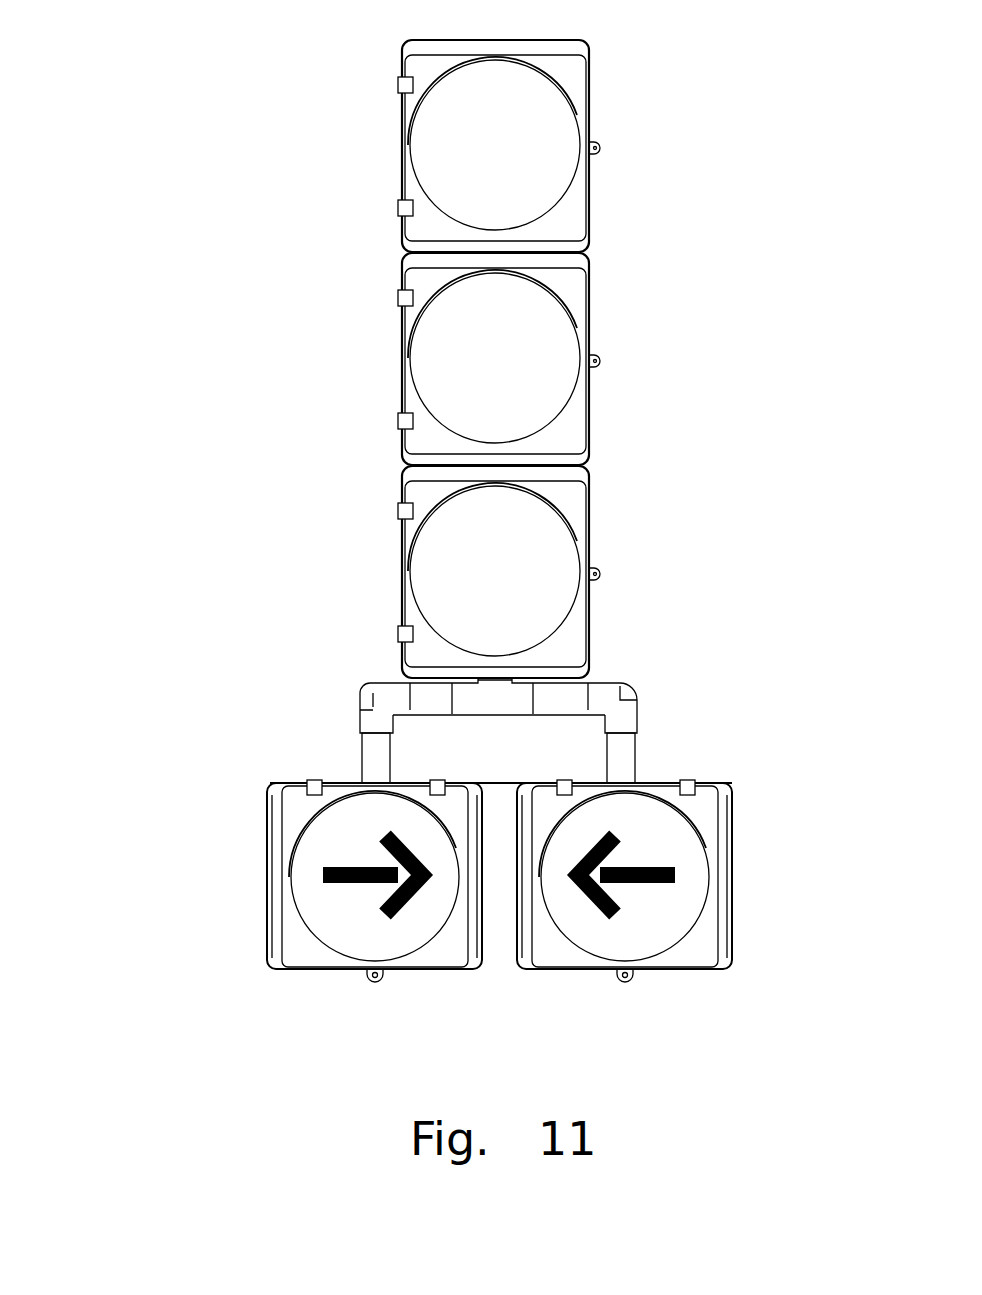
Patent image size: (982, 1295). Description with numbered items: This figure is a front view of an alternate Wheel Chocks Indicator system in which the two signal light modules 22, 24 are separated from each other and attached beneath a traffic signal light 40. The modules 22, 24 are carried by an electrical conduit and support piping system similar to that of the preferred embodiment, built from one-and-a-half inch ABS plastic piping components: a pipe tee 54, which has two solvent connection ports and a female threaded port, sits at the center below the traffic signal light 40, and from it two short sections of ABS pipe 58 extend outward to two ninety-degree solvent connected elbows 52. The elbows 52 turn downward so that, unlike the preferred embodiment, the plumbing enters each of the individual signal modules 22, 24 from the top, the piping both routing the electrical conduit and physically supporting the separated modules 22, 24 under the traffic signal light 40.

The traffic signal light 40 is at (402, 115).
The signal light module 22 is at (263, 823).
The signal light module 24 is at (733, 840).
The 90 degree solvent connected elbow 52 is at (375, 712).
The pipe tee 54 is at (480, 703).
The short section of ABS pipe 58 is at (425, 703).